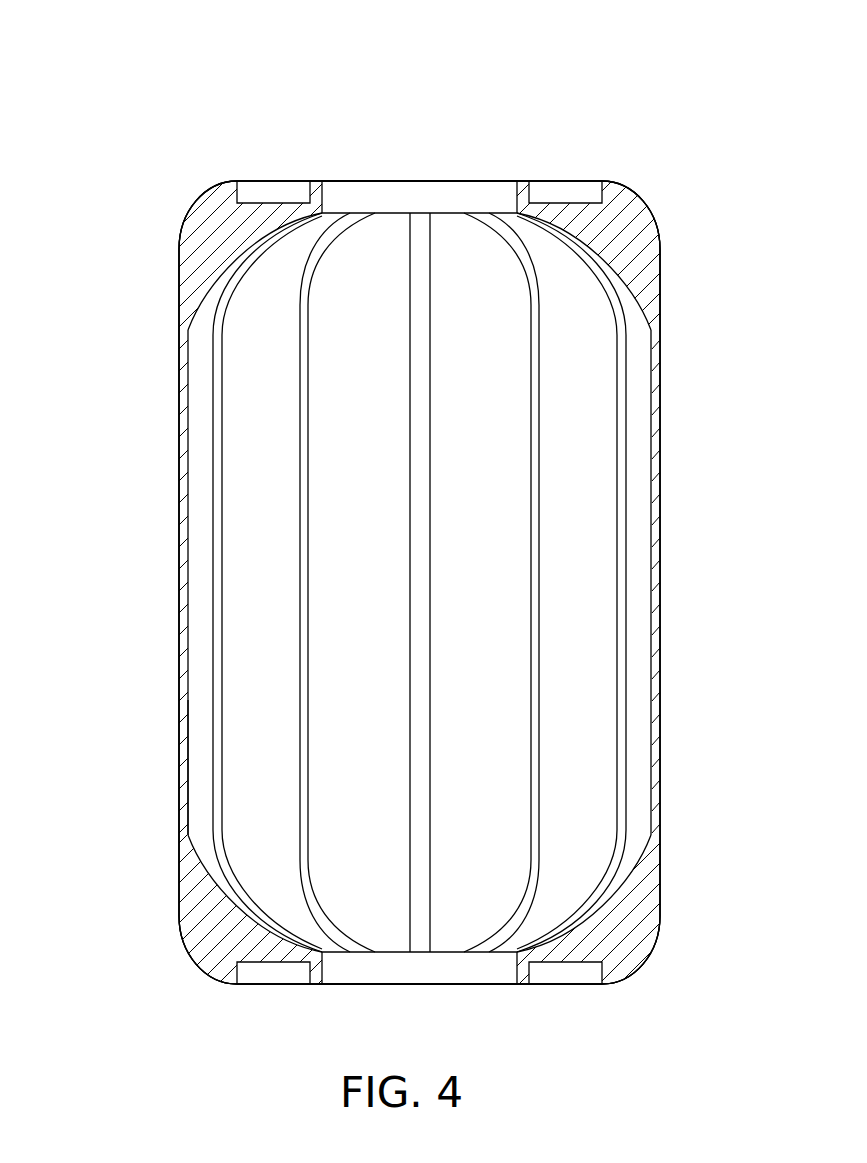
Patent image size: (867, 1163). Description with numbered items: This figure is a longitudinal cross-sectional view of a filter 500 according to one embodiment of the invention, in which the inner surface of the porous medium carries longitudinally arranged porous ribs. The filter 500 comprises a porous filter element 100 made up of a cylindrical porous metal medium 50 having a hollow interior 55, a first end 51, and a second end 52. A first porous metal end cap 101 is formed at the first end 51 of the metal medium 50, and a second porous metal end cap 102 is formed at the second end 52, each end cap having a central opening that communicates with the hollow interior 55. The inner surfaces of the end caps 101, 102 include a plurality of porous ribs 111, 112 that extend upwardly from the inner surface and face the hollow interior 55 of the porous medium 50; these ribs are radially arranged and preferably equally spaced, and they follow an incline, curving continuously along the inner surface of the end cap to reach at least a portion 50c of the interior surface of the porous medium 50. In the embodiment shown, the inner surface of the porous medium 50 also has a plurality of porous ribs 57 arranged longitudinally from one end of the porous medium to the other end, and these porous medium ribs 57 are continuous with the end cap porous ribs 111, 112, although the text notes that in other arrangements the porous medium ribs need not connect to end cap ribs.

The filter 500 is at (152, 162).
The porous filter element 100 is at (160, 492).
The cylindrical porous metal medium 50 is at (658, 350).
The portion of the interior surface of the porous medium 50c is at (207, 857).
The first end 51 is at (187, 313).
The second end 52 is at (185, 837).
The hollow interior 55 is at (348, 578).
The porous ribs 57 is at (535, 512).
The first porous metal end cap 101 is at (623, 220).
The second porous metal end cap 102 is at (630, 940).
The porous ribs 111 is at (530, 892).
The porous ribs 112 is at (527, 275).